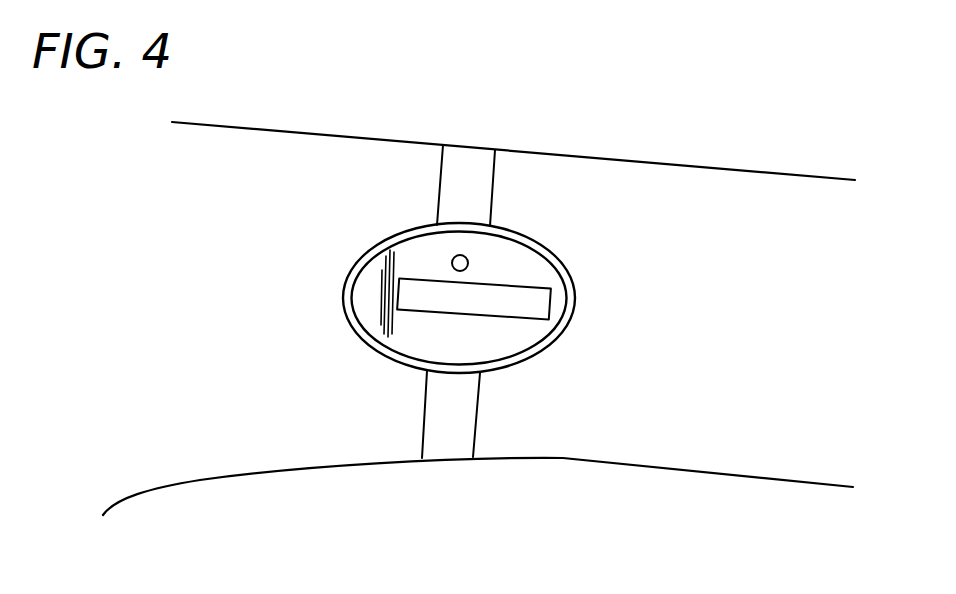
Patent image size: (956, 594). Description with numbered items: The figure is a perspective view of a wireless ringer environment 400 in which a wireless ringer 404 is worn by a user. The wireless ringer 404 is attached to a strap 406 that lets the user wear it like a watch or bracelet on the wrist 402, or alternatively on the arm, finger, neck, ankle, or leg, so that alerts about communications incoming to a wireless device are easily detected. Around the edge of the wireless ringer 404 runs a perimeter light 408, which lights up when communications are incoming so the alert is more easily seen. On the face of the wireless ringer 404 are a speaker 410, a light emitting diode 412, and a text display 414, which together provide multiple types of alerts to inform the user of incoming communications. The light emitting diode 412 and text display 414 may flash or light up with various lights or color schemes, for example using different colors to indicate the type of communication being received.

The wireless ringer environment 400 is at (645, 32).
The wrist 402 is at (703, 207).
The wireless ringer 404 is at (390, 237).
The strap 406 is at (470, 187).
The perimeter light 408 is at (352, 275).
The speaker 410 is at (383, 305).
The light emitting diode 412 is at (466, 259).
The text display 414 is at (543, 306).